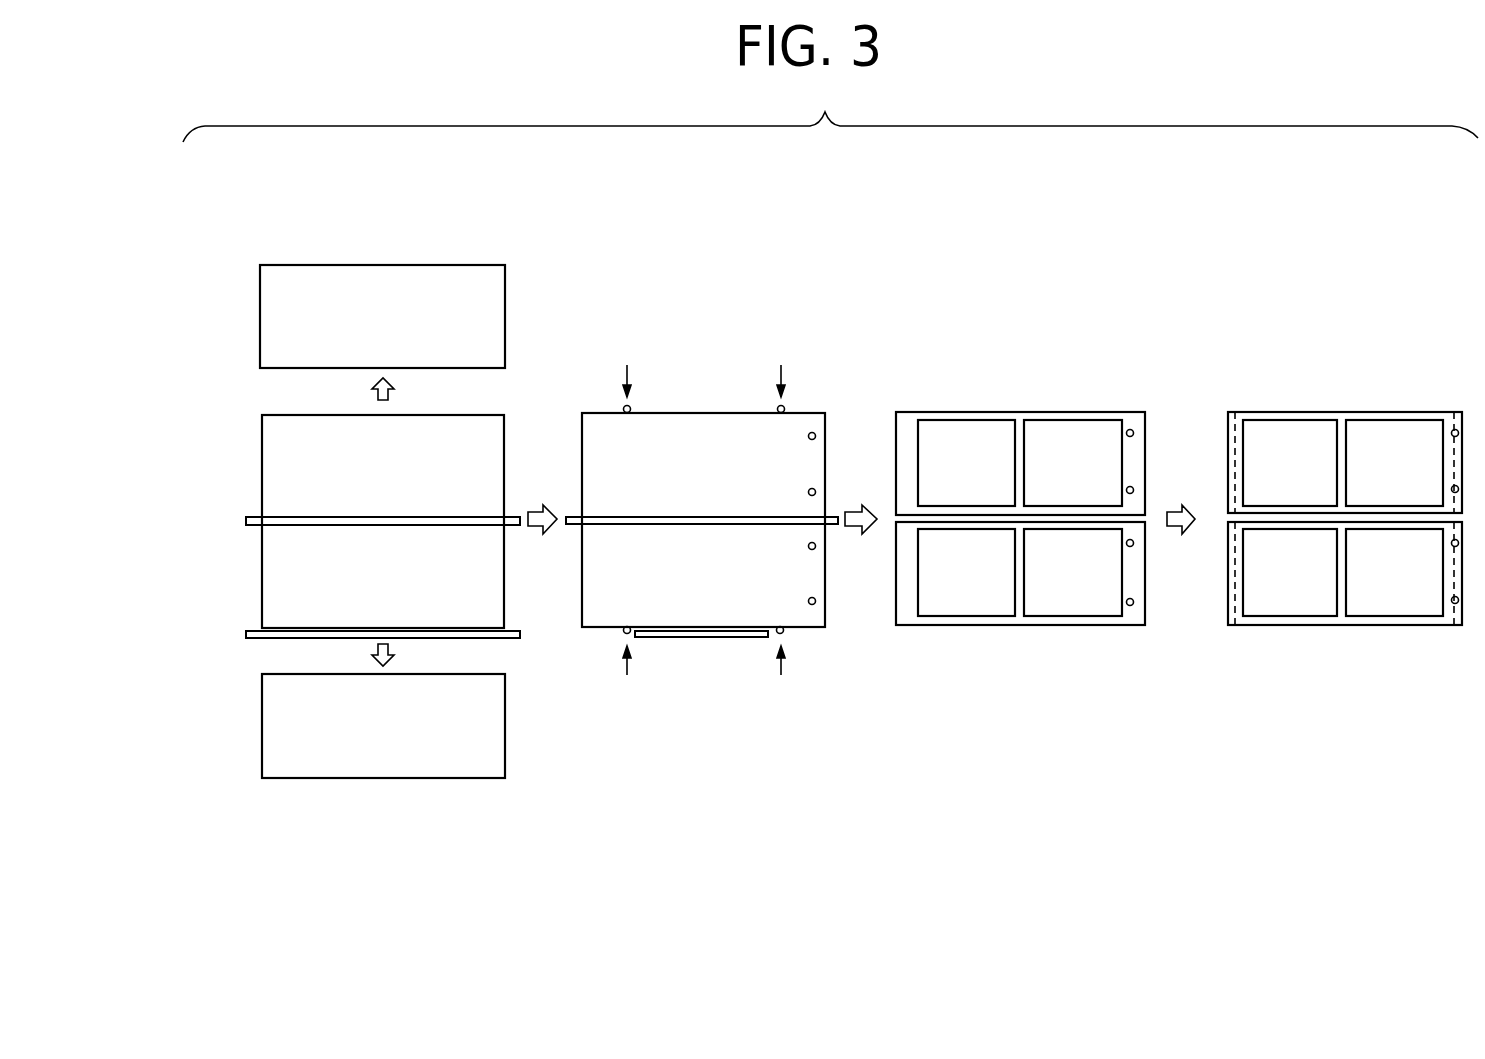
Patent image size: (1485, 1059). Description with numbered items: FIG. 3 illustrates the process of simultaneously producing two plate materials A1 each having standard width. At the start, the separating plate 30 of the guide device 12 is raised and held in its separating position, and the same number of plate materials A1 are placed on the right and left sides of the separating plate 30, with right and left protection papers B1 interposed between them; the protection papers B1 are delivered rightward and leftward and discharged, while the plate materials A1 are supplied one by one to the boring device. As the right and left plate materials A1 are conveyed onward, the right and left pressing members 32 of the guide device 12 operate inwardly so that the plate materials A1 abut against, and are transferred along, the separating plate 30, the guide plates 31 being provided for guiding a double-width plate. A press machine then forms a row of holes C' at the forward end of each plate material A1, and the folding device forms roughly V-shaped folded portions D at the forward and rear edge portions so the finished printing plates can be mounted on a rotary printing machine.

The protection paper B1 is at (358, 297).
The plate material having standard width A1 is at (290, 445).
The separating plate 30 is at (437, 522).
The guide plate 31 is at (447, 640).
The guide device 12 is at (571, 528).
The pressing member 32 is at (624, 405).
The hole C' is at (1134, 505).
The folded portion D is at (1232, 445).